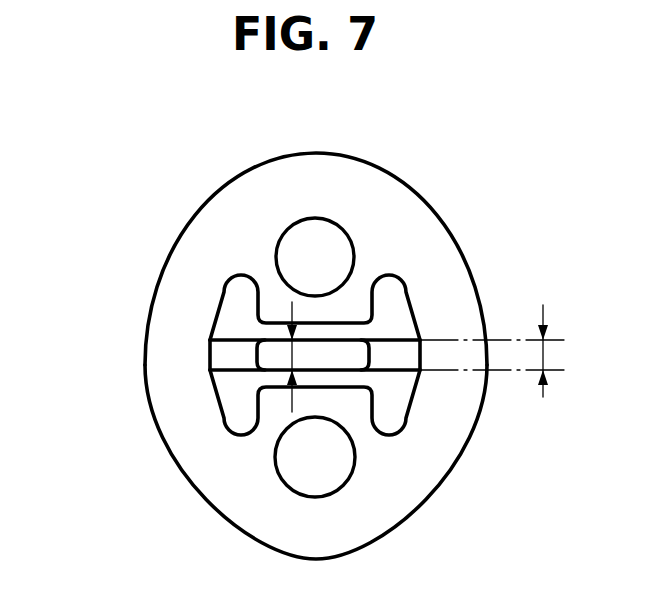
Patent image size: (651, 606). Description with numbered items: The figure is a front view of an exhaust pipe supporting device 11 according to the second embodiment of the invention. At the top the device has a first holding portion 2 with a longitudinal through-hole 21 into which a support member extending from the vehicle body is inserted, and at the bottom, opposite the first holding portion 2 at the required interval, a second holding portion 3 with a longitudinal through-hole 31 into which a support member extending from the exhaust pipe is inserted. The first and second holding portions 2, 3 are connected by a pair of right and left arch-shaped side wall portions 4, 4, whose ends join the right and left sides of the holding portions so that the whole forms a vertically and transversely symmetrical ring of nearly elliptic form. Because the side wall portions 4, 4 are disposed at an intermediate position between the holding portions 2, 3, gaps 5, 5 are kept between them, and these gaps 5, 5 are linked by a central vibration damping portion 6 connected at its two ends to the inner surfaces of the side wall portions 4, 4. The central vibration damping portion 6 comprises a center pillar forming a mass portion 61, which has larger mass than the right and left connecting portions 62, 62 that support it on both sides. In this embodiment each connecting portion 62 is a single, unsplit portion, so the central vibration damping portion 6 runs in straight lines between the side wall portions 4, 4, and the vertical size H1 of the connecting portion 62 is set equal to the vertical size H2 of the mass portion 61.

The exhaust pipe supporting device 11 is at (175, 233).
The first holding portion 2 is at (340, 173).
The through-hole 21 is at (325, 247).
The second holding portion 3 is at (313, 537).
The through-hole 31 is at (332, 468).
The side wall portion 4 is at (157, 353).
The gap 5 is at (237, 304).
The central vibration damping portion 6 is at (336, 336).
The mass portion 61 is at (353, 353).
The connecting portion 62 is at (232, 353).
The size in the vertical direction of the connecting portion H1 is at (545, 357).
The size in the vertical direction of the mass portion H2 is at (290, 348).